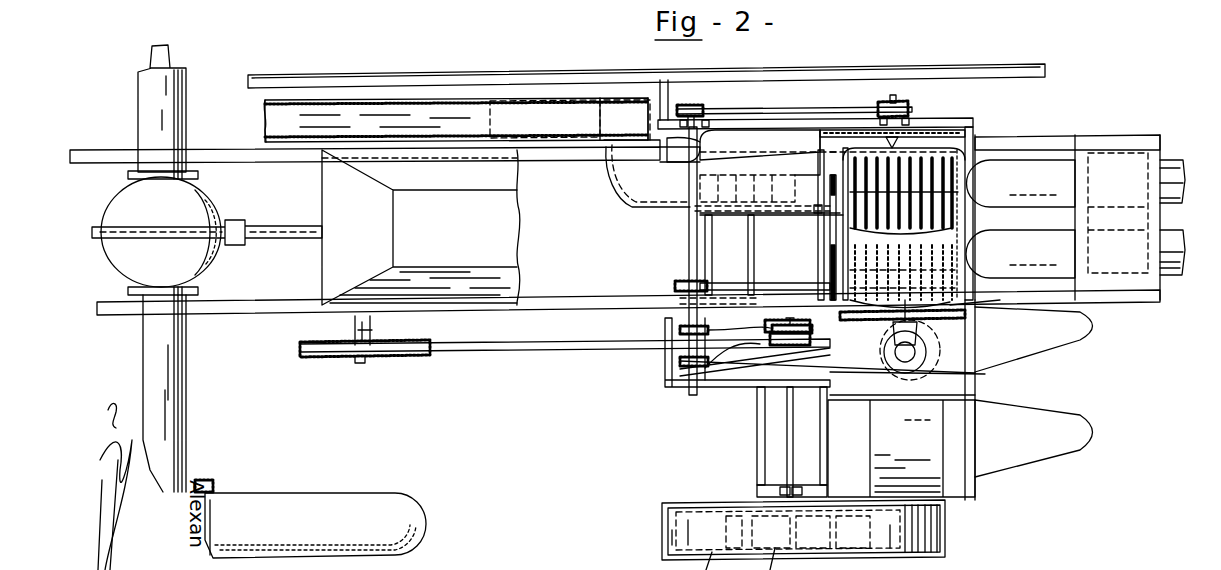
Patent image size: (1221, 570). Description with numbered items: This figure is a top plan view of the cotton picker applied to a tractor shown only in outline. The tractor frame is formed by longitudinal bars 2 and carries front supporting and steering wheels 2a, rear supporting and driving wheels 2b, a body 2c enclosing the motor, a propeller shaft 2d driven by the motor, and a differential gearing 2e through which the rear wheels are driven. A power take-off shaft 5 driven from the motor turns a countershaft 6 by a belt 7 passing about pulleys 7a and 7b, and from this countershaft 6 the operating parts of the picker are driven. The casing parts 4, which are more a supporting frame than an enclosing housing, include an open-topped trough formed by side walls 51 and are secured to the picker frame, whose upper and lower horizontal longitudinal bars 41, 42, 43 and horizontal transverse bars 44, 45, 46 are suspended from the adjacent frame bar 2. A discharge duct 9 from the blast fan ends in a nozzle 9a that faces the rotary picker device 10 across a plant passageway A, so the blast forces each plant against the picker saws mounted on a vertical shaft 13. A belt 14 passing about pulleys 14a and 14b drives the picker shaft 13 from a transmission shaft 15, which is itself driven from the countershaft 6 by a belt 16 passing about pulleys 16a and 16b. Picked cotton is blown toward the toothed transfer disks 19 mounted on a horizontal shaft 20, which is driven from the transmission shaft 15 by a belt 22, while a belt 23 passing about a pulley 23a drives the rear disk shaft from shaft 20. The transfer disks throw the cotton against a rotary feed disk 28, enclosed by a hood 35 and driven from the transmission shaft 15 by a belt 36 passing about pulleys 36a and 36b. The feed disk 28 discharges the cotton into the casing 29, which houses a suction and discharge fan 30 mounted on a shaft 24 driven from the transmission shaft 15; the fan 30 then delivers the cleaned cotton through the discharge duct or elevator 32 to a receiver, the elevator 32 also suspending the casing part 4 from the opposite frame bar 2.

The longitudinal bars 2 is at (300, 152).
The front supporting and steering wheels 2a is at (1170, 165).
The rear supporting and driving wheels 2b is at (290, 498).
The body 2c is at (421, 227).
The propeller shaft 2d is at (288, 242).
The differential gearing 2e is at (112, 206).
The casing parts 4 is at (966, 244).
The power take-off shaft 5 is at (373, 328).
The countershaft 6 is at (787, 430).
The belt 7 is at (565, 350).
The pulley 7a is at (425, 357).
The pulley 7b is at (758, 328).
The discharge duct 9 is at (870, 445).
The nozzle 9a is at (915, 396).
The rotary picker device 10 is at (930, 355).
The vertical shaft 13 is at (900, 364).
The belt 14 is at (745, 375).
The pulley 14a is at (686, 368).
The pulley 14b is at (968, 372).
The transmission shaft 15 is at (689, 229).
The belt 16 is at (718, 368).
The pulley 16a is at (772, 330).
The pulley 16b is at (675, 330).
The toothed transfer disks 19 is at (948, 213).
The horizontal shaft 20 is at (758, 287).
The belt 22 is at (680, 286).
The belt 23 is at (828, 247).
The pulley 23a is at (826, 209).
The shaft 24 is at (745, 256).
The rotary feed disk 28 is at (815, 148).
The casing 29 is at (648, 205).
The suction and discharge fan 30 is at (744, 178).
The discharge duct 32 is at (456, 120).
The hood 35 is at (975, 128).
The belt 36 is at (780, 109).
The pulley 36a is at (908, 106).
The pulley 36b is at (700, 107).
The horizontal longitudinal bar 41 is at (960, 302).
The horizontal longitudinal bar 42 is at (958, 330).
The horizontal longitudinal bar 43 is at (958, 376).
The horizontal transverse bar 44 is at (975, 460).
The horizontal transverse bar 45 is at (829, 440).
The horizontal transverse bar 46 is at (757, 453).
The side walls 51 is at (822, 160).
The plant passageway A is at (1065, 376).